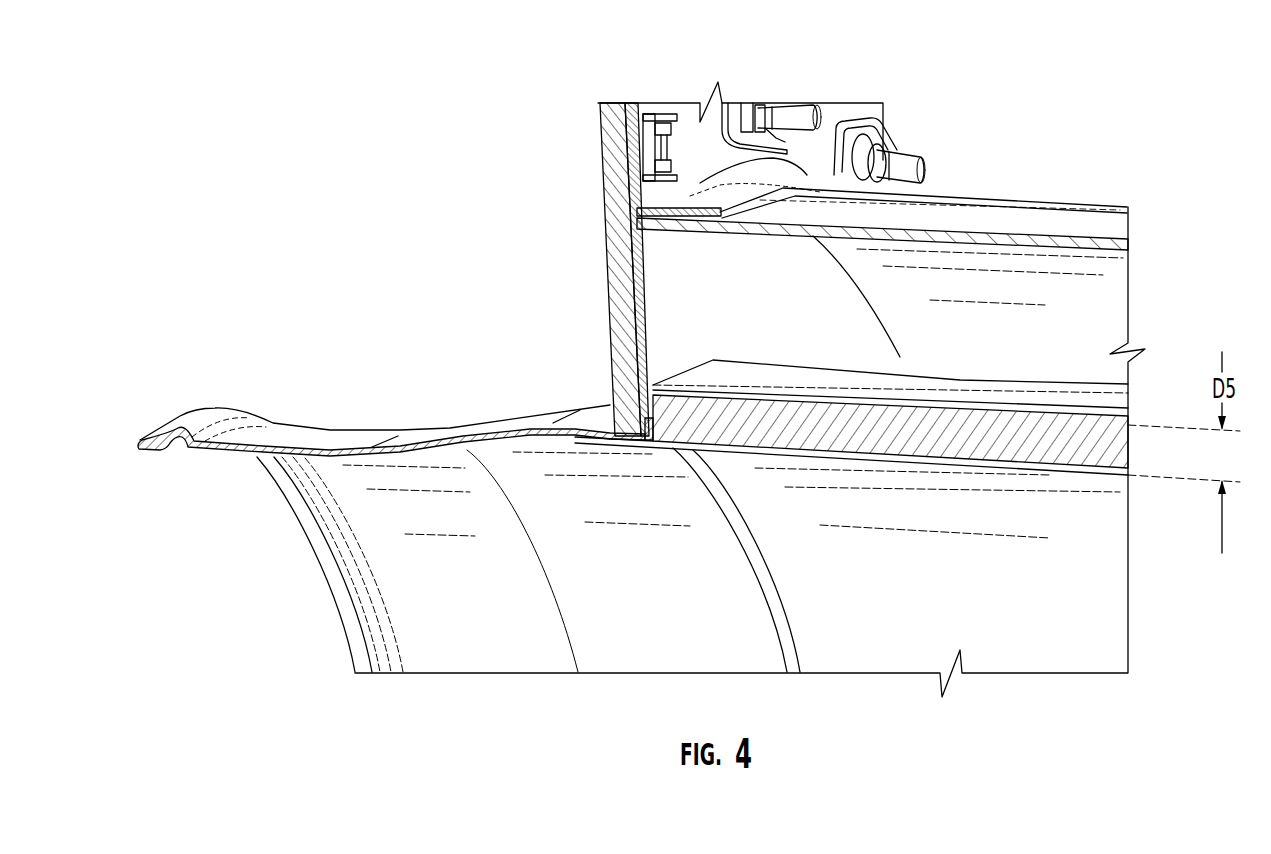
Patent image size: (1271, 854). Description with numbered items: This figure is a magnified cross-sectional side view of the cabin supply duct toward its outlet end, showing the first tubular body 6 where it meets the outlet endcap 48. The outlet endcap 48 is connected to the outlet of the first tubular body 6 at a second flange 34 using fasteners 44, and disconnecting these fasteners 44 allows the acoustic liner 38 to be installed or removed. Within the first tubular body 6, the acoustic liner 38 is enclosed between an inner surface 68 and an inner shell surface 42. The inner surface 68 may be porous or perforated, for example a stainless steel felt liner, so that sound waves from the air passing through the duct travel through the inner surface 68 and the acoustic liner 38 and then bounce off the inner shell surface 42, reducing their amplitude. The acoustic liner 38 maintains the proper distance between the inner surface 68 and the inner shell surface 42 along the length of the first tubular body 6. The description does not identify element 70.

The first tubular body 6 is at (1027, 190).
The second flange 34 is at (685, 124).
The acoustic liner 38 is at (1074, 446).
The inner shell surface 42 is at (987, 394).
The fasteners 44 is at (930, 167).
The outlet endcap 48 is at (338, 408).
The inner surface 68 is at (910, 460).
The fender panel 70 is at (1063, 221).